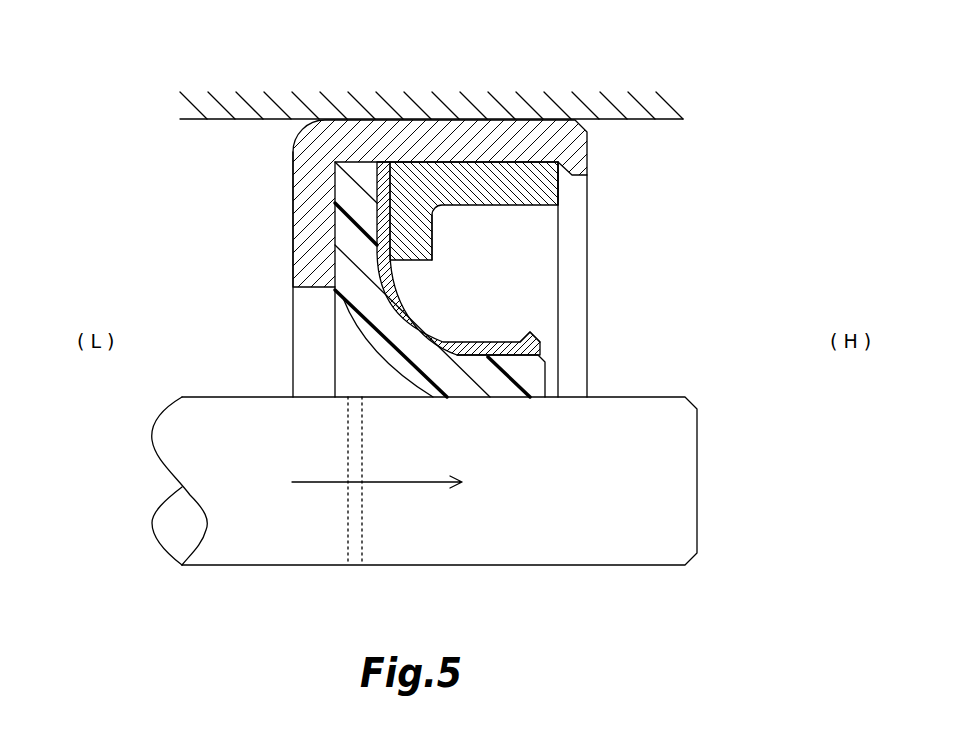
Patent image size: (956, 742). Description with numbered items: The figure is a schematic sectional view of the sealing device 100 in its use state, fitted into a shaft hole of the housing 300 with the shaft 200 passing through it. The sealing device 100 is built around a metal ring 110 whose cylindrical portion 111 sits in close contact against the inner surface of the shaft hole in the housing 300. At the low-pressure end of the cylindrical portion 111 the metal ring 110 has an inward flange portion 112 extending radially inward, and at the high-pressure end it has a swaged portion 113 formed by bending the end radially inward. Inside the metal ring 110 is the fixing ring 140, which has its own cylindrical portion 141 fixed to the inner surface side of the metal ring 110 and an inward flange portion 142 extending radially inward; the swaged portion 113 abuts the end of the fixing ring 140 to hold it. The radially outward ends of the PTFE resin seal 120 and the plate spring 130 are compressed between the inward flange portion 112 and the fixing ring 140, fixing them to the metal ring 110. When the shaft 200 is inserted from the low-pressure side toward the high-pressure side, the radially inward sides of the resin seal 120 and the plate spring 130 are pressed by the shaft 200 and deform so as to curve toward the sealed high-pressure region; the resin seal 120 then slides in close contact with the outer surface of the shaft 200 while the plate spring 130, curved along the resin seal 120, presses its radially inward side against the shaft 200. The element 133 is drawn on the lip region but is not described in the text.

The sealing device 100 is at (254, 242).
The metal ring 110 is at (509, 212).
The cylindrical portion 111 is at (464, 134).
The inward flange portion 112 is at (303, 188).
The swaged portion 113 is at (588, 167).
The resin seal 120 is at (348, 320).
The plate spring 130 is at (577, 286).
The protrusion of seal lip 133 is at (530, 342).
The fixing ring 140 is at (591, 249).
The cylindrical portion 141 is at (543, 188).
The inward flange portion 142 is at (432, 250).
The shaft 200 is at (424, 481).
The housing 300 is at (431, 93).